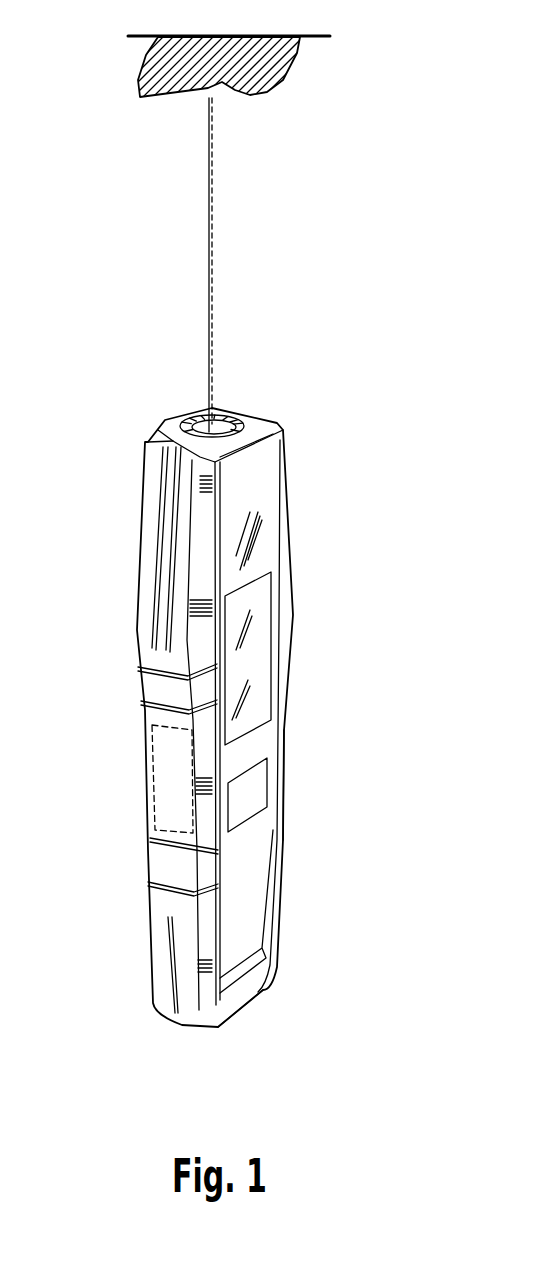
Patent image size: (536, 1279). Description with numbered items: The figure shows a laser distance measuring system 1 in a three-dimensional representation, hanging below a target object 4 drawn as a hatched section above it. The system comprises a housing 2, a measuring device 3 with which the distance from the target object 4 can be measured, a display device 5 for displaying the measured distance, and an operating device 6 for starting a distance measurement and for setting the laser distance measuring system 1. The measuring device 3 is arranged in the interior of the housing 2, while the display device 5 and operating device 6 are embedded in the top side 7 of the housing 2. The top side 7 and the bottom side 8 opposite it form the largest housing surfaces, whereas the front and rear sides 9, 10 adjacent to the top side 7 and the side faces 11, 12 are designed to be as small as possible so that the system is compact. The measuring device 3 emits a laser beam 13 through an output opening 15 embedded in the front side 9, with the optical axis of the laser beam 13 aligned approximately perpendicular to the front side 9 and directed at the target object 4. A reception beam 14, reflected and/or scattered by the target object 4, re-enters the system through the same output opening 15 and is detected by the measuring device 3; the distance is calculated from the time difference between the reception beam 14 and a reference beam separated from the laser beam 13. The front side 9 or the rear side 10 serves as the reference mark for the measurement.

The laser distance measuring system 1 is at (344, 430).
The housing 2 is at (256, 495).
The measuring device 3 is at (152, 782).
The target object 4 is at (178, 72).
The display device 5 is at (262, 645).
The operating device 6 is at (260, 783).
The top side 7 is at (248, 891).
The bottom side 8 is at (129, 543).
The front side 9 is at (257, 420).
The rear side 10 is at (249, 1006).
The side face 11 is at (160, 910).
The side face 12 is at (288, 724).
The laser beam 13 is at (209, 262).
The reception beam 14 is at (212, 196).
The output opening 15 is at (207, 413).